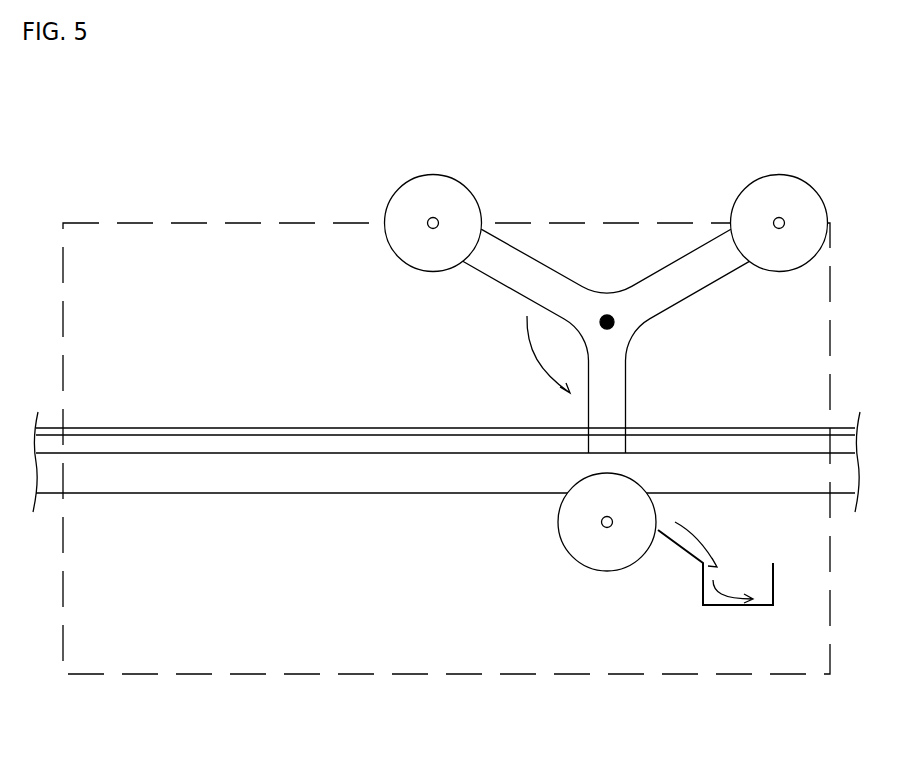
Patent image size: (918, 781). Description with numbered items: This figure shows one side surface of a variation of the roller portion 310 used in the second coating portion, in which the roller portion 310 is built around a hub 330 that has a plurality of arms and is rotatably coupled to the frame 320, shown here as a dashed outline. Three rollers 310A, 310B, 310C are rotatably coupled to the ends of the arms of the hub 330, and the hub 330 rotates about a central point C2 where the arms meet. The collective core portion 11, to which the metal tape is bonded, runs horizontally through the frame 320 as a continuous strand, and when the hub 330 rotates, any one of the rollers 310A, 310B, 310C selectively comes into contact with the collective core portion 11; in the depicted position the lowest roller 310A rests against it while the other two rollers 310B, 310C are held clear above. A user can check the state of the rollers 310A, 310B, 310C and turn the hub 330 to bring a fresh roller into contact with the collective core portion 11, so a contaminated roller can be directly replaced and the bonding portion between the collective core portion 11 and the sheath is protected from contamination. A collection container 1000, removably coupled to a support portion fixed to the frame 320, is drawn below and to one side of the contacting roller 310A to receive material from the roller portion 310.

The collective core portion 11 is at (180, 452).
The frame 320 is at (830, 322).
The hub 330 is at (690, 280).
The roller portion 310 is at (603, 413).
The roller 310A is at (603, 573).
The roller 310B is at (432, 174).
The roller 310C is at (777, 175).
The center point C2 is at (607, 315).
The collection container 1000 is at (786, 616).